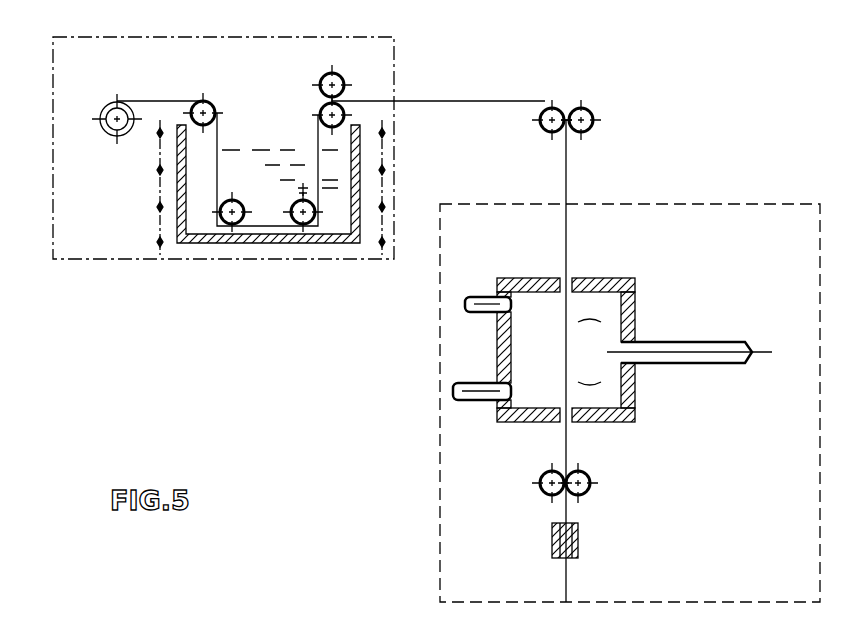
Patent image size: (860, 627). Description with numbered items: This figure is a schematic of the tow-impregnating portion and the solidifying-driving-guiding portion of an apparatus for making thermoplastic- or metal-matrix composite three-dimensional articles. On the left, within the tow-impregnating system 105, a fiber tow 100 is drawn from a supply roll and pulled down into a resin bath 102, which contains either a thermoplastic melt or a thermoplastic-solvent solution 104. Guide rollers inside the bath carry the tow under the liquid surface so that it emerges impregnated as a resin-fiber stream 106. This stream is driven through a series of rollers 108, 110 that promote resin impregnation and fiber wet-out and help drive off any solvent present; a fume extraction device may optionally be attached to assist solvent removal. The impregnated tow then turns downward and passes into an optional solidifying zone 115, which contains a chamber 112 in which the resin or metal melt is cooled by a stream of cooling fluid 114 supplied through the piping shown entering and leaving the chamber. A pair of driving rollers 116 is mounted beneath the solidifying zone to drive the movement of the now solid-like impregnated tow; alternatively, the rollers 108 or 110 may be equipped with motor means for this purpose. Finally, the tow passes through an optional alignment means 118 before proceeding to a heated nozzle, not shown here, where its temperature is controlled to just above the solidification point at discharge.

The fiber tow 100 is at (178, 98).
The resin bath 102 is at (318, 240).
The thermoplastic melt or thermoplastic-solvent solution 104 is at (205, 234).
The tow-impregnating system 105 is at (86, 276).
The resin-fiber stream 106 is at (458, 103).
The rollers 108 is at (319, 78).
The rollers 110 is at (586, 108).
The chamber 112 is at (602, 305).
The stream of cooling fluid 114 is at (700, 352).
The solidifying zone 115 is at (428, 478).
The driving rollers 116 is at (591, 472).
The alignment means 118 is at (580, 538).